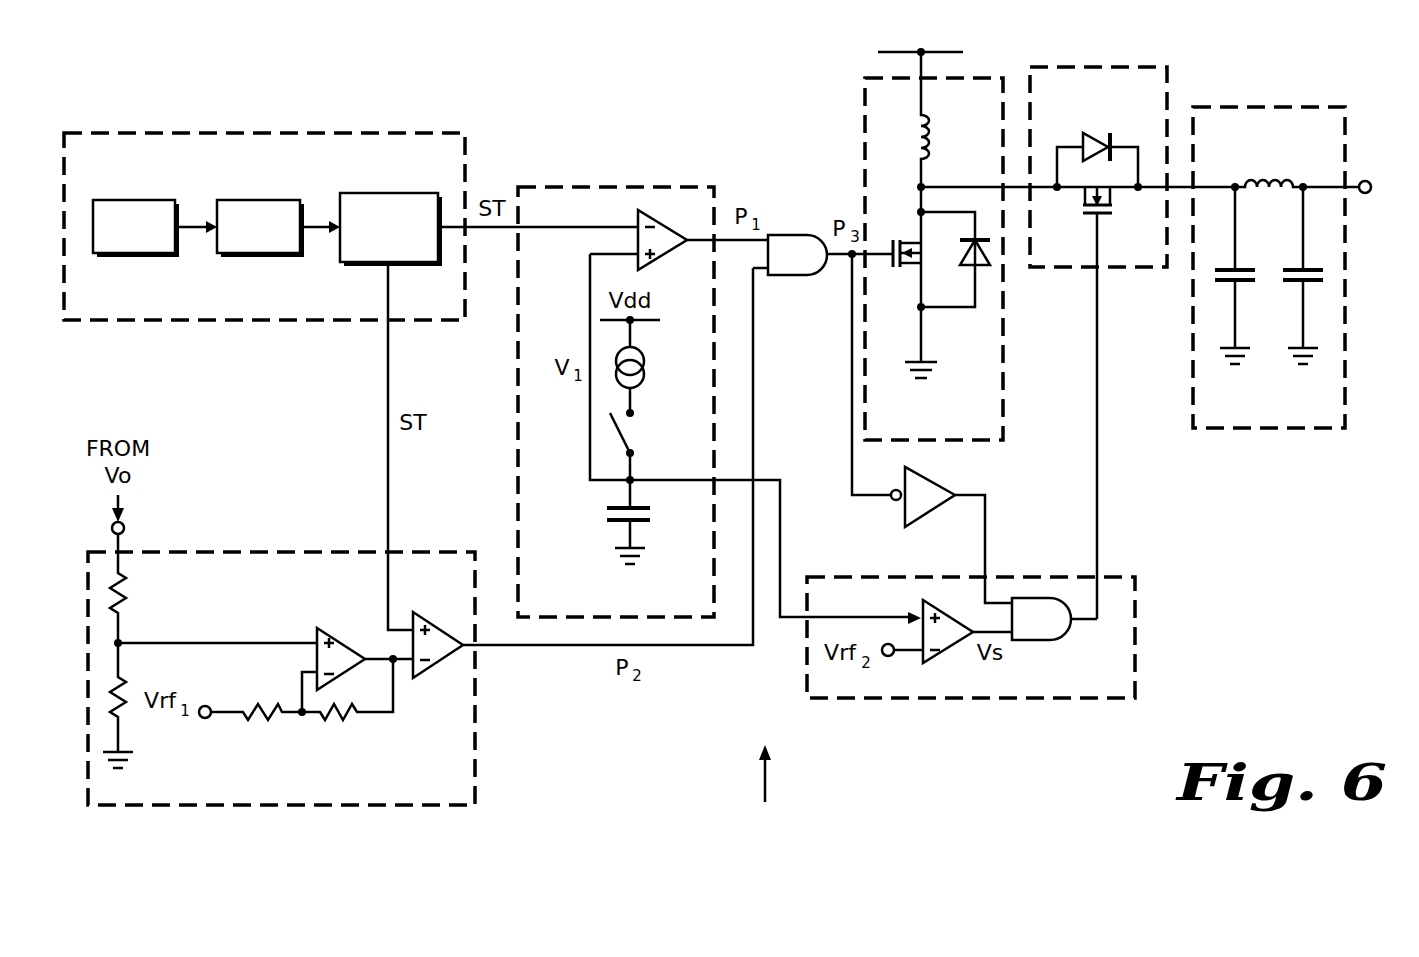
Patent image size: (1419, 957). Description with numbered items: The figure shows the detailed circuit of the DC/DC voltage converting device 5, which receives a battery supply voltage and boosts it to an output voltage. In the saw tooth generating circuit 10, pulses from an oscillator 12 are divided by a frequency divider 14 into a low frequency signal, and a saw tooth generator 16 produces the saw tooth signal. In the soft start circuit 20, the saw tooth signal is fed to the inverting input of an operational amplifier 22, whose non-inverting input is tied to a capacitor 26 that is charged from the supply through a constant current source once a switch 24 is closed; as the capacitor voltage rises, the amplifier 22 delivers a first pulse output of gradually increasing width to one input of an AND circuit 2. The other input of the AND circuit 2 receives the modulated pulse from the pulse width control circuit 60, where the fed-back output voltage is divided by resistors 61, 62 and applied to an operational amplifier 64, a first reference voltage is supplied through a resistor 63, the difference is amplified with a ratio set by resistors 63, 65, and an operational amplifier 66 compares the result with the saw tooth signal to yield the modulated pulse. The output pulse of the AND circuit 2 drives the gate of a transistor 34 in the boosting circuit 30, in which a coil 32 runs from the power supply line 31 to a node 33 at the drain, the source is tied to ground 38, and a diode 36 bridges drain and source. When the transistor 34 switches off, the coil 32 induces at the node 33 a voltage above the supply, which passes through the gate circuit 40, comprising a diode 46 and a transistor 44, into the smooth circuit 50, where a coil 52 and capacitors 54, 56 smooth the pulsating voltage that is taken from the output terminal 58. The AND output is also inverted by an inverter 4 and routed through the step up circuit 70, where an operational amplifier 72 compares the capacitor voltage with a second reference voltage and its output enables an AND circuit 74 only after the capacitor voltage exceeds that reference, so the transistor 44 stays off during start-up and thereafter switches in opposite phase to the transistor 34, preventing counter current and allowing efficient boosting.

The AND circuit 2 is at (790, 275).
The inverter 4 is at (905, 520).
The DC/DC voltage converting device 5 is at (765, 791).
The saw tooth generating circuit 10 is at (343, 133).
The oscillator 12 is at (133, 200).
The frequency divider 14 is at (252, 200).
The saw tooth generator 16 is at (350, 262).
The soft start circuit 20 is at (618, 187).
The operational amplifier 22 is at (652, 214).
The switch 24 is at (635, 413).
The capacitor 26 is at (607, 508).
The boosting circuit 30 is at (865, 172).
The power supply line 31 is at (957, 52).
The coil 32 is at (917, 145).
The node 33 is at (925, 183).
The transistor 34 is at (890, 266).
The diode 36 is at (961, 250).
The ground 38 is at (935, 362).
The gate circuit 40 is at (1098, 67).
The transistor 44 is at (1083, 213).
The diode 46 is at (1090, 135).
The smooth circuit 50 is at (1240, 107).
The coil 52 is at (1268, 175).
The capacitor 54 is at (1250, 268).
The capacitor 56 is at (1300, 285).
The output terminal 58 is at (1370, 195).
The pulse width control circuit 60 is at (232, 552).
The voltage dividing resistor 61 is at (130, 597).
The voltage dividing resistor 62 is at (125, 717).
The resistor 63 is at (248, 708).
The operational amplifier 64 is at (325, 628).
The resistor 65 is at (358, 715).
The operational amplifier 66 is at (415, 615).
The step up circuit 70 is at (1030, 698).
The operational amplifier 72 is at (940, 657).
The AND circuit 74 is at (1072, 620).